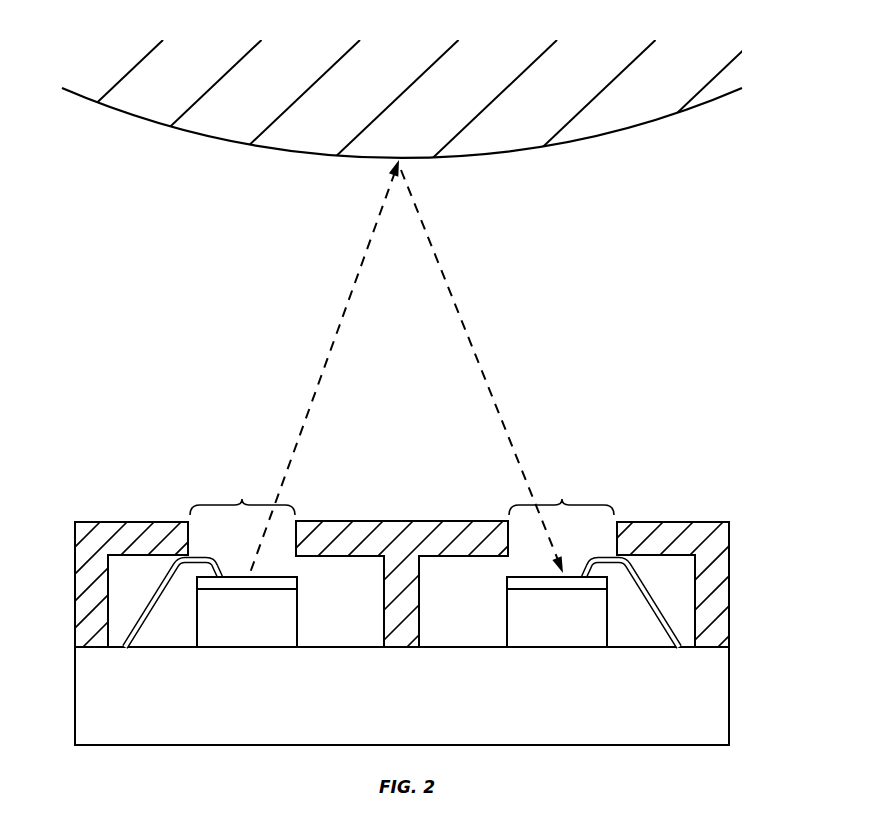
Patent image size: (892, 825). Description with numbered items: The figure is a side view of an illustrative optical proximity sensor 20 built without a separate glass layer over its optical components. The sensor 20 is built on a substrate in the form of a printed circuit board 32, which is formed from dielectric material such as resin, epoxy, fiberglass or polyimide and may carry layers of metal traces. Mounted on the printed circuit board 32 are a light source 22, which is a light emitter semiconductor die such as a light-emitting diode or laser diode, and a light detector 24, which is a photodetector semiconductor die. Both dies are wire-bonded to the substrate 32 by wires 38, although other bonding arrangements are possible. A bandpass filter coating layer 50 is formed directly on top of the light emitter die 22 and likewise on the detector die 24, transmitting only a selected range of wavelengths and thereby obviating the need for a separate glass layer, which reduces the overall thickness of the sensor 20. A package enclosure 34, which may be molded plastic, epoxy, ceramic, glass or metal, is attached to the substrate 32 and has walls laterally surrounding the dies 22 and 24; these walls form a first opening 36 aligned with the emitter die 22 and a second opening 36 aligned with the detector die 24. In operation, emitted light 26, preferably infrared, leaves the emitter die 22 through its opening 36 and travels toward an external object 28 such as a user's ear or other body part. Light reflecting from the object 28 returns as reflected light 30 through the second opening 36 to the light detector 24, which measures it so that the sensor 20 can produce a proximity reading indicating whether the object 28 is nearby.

The proximity sensor 20 is at (780, 356).
The light source 22 is at (245, 638).
The light detector 24 is at (557, 638).
The emitted light 26 is at (340, 322).
The external object 28 is at (135, 115).
The reflected light 30 is at (466, 318).
The printed circuit board 32 is at (82, 695).
The package enclosure 34 is at (405, 520).
The openings 36 is at (402, 496).
The wires 38 is at (148, 608).
The bandpass filter coating layer 50 is at (297, 580).